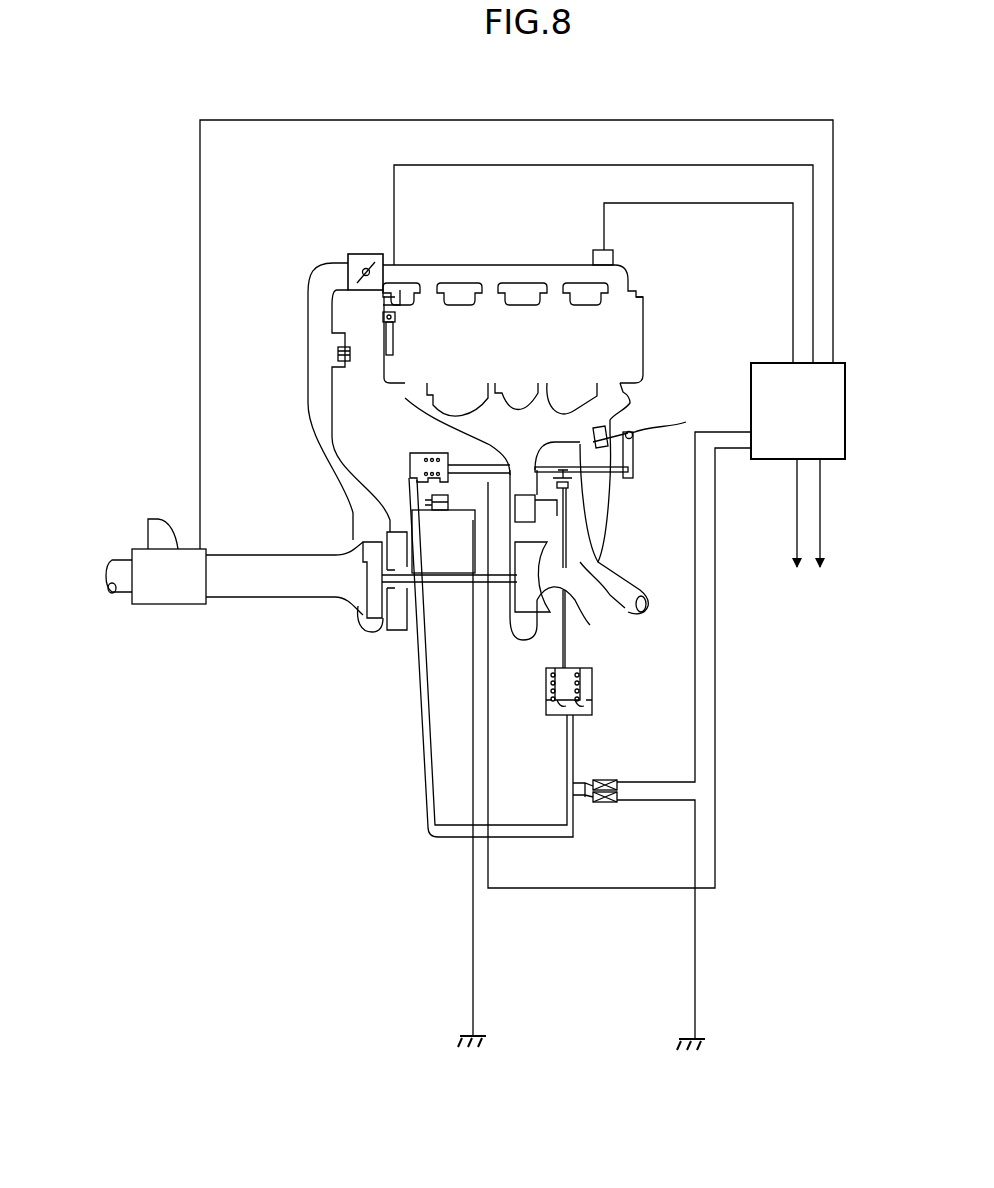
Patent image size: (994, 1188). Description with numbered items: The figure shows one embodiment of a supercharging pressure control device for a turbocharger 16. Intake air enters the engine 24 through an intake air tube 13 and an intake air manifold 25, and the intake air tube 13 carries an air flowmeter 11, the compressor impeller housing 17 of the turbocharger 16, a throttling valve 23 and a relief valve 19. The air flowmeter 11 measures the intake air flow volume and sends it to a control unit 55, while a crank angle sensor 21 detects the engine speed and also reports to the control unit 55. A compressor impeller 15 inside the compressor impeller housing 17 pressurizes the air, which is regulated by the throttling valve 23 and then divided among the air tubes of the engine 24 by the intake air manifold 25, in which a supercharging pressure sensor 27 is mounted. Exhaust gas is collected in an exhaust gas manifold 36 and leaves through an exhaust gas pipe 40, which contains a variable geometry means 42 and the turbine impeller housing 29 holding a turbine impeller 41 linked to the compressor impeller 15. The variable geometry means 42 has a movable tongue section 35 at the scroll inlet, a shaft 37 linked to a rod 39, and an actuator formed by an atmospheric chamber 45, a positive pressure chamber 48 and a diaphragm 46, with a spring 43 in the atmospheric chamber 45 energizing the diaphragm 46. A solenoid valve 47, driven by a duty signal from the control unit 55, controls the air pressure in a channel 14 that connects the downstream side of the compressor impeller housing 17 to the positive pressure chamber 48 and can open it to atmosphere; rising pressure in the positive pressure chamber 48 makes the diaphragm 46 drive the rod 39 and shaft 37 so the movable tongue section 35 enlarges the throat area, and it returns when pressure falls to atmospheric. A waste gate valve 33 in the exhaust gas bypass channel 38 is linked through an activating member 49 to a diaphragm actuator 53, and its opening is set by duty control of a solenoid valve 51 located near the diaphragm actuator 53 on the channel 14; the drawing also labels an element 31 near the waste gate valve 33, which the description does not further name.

The air flowmeter 11 is at (178, 604).
The intake air tube 13 is at (283, 597).
The channel 14 is at (430, 832).
The compressor impeller 15 is at (352, 612).
The turbocharger 16 is at (454, 590).
The compressor impeller housing 17 is at (376, 632).
The relief valve 19 is at (350, 356).
The crank angle sensor 21 is at (383, 315).
The throttling valve 23 is at (366, 254).
The engine 24 is at (646, 335).
The intake air manifold 25 is at (505, 265).
The supercharging pressure sensor 27 is at (613, 256).
The turbine impeller housing 29 is at (527, 642).
The throttle valve 31 is at (625, 400).
The waste gate valve 33 is at (612, 432).
The movable tongue section 35 is at (572, 480).
The exhaust gas manifold 36 is at (445, 540).
The shaft 37 is at (567, 526).
The exhaust gas bypass channel 38 is at (606, 544).
The rod 39 is at (592, 538).
The exhaust gas pipe 40 is at (480, 505).
The turbine impeller 41 is at (559, 578).
The variable geometry means 42 is at (575, 632).
The spring 43 is at (586, 668).
The atmospheric chamber 45 is at (592, 690).
The diaphragm 46 is at (592, 705).
The solenoid valve 47 is at (598, 780).
The positive pressure chamber 48 is at (568, 696).
The activating member 49 is at (684, 589).
The solenoid valve 51 is at (440, 510).
The diaphragm actuator 53 is at (436, 455).
The control unit 55 is at (766, 460).